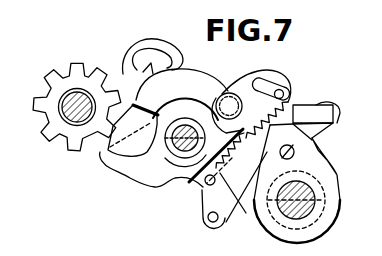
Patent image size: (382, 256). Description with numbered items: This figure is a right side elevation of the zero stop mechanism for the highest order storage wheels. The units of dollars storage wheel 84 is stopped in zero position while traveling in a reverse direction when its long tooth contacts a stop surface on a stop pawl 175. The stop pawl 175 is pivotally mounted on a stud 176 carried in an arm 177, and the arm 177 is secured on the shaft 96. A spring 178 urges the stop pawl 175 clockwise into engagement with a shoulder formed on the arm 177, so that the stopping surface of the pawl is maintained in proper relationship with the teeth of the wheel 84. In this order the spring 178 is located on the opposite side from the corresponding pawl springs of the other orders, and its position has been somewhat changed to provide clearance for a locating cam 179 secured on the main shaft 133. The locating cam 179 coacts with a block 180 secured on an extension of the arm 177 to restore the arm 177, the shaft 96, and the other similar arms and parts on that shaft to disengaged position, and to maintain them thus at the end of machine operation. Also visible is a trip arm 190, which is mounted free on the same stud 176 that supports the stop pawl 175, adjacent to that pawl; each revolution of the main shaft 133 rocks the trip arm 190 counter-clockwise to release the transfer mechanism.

The units of dollars storage wheel 84 is at (70, 75).
The trip arm 190 is at (135, 50).
The stop pawl 175 is at (195, 73).
The stud 176 is at (230, 104).
The block 180 is at (318, 112).
The locating cam 179 is at (325, 178).
The main shaft 133 is at (314, 212).
The spring 178 is at (228, 211).
The arm 177 is at (158, 174).
The shaft 96 is at (167, 155).